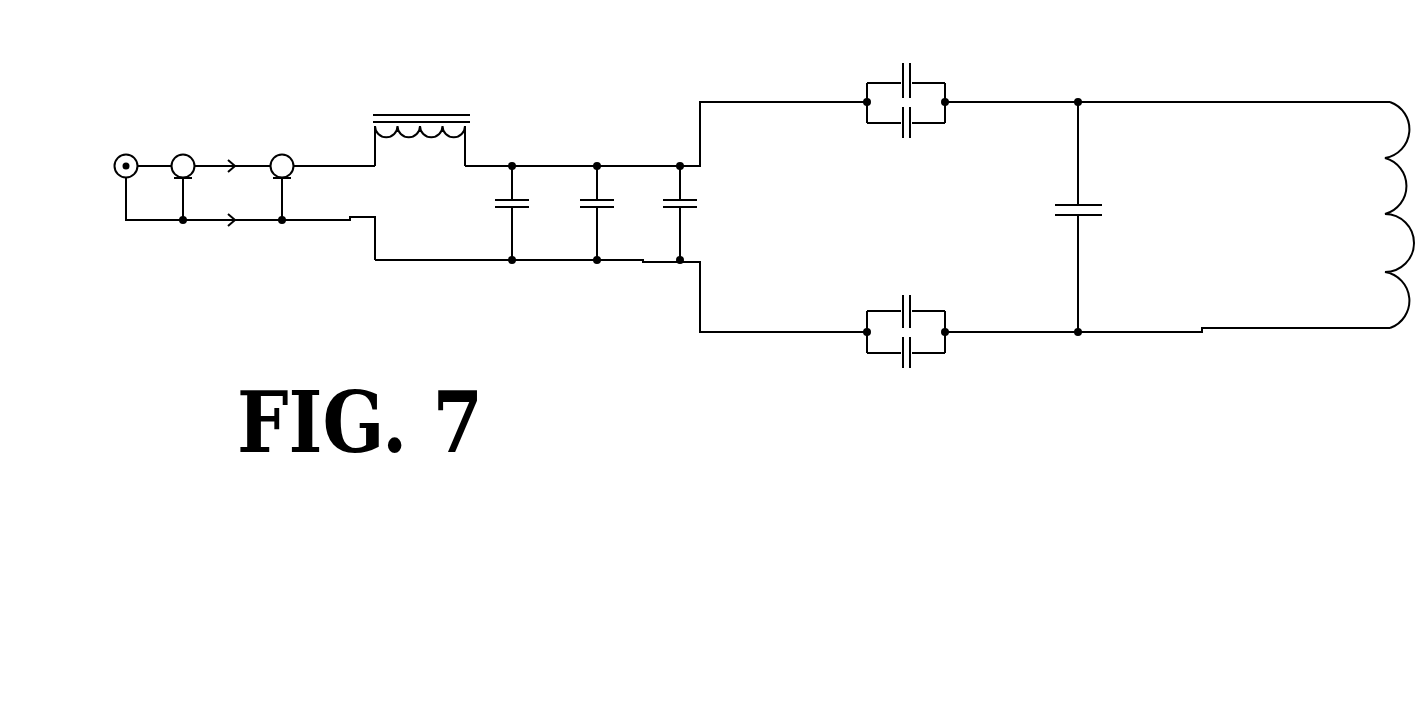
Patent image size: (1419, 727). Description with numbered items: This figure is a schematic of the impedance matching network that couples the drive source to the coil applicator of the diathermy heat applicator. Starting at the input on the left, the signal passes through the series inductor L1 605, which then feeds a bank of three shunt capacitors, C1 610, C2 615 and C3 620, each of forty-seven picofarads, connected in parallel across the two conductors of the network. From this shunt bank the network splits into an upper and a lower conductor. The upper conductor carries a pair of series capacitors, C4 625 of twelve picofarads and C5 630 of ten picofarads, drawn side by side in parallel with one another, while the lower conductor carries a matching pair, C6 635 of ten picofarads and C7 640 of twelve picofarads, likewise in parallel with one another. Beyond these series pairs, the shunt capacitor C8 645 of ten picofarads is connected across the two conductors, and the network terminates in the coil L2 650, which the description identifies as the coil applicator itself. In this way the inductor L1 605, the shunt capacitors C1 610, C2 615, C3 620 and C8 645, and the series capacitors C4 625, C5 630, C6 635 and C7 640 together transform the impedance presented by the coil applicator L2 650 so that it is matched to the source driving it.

The inductor L1 605 is at (421, 121).
The capacitor C1 610 is at (486, 213).
The capacitor C2 615 is at (576, 213).
The capacitor C3 620 is at (659, 213).
The capacitor C4 625 is at (906, 67).
The capacitor C5 630 is at (906, 142).
The capacitor C6 635 is at (906, 285).
The capacitor C7 640 is at (906, 373).
The capacitor C8 645 is at (1104, 217).
The coil applicator L2 650 is at (1364, 215).